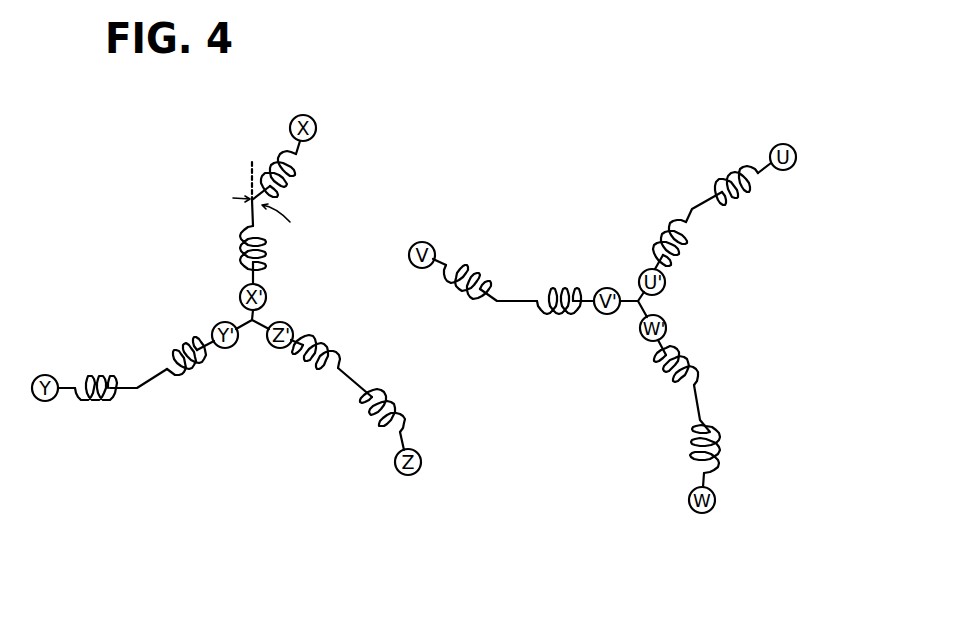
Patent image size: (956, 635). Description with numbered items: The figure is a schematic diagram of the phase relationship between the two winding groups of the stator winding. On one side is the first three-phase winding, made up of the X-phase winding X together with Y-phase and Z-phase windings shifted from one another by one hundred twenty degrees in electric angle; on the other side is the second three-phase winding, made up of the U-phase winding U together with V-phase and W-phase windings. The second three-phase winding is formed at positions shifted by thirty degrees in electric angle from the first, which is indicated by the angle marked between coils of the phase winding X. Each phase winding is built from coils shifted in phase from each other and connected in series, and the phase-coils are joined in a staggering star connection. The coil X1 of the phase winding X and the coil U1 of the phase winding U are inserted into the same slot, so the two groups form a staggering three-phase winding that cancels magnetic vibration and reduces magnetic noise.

The X-phase winding X is at (268, 128).
The coil of the phase winding X X1 is at (306, 181).
The U-phase winding U is at (763, 155).
The coil of the phase winding U U1 is at (702, 252).